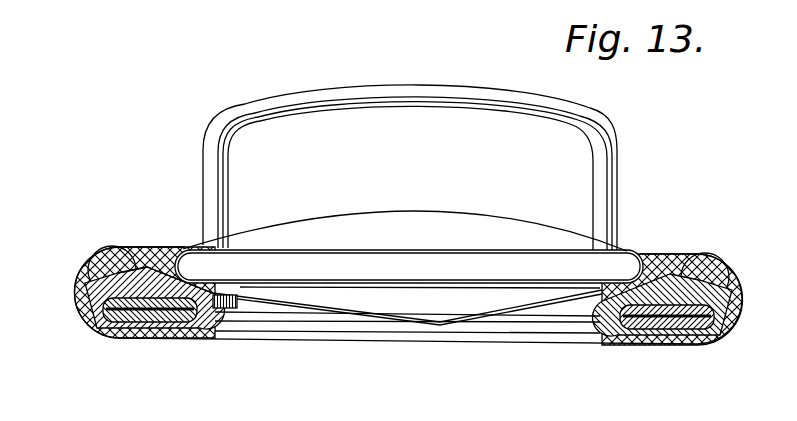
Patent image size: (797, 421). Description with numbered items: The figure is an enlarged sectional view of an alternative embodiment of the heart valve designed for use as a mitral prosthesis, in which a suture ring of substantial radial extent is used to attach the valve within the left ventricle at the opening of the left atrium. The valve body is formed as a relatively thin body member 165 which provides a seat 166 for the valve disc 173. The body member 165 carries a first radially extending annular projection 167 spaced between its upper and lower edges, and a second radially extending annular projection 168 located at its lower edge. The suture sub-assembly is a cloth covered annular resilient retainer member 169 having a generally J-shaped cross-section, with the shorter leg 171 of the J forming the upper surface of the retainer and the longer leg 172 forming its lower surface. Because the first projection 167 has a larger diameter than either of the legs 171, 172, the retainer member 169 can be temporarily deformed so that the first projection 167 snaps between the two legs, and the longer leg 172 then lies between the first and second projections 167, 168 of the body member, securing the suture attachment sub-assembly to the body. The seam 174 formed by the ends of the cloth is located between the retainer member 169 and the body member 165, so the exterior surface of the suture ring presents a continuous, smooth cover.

The body member 165 is at (147, 290).
The seat 166 is at (163, 272).
The first radially extending annular projection 167 is at (113, 292).
The second radially extending annular projection 168 is at (197, 338).
The retainer member 169 is at (88, 317).
The shorter leg 171 is at (95, 262).
The longer leg 172 is at (165, 307).
The valve disc 173 is at (414, 212).
The seam 174 is at (193, 272).